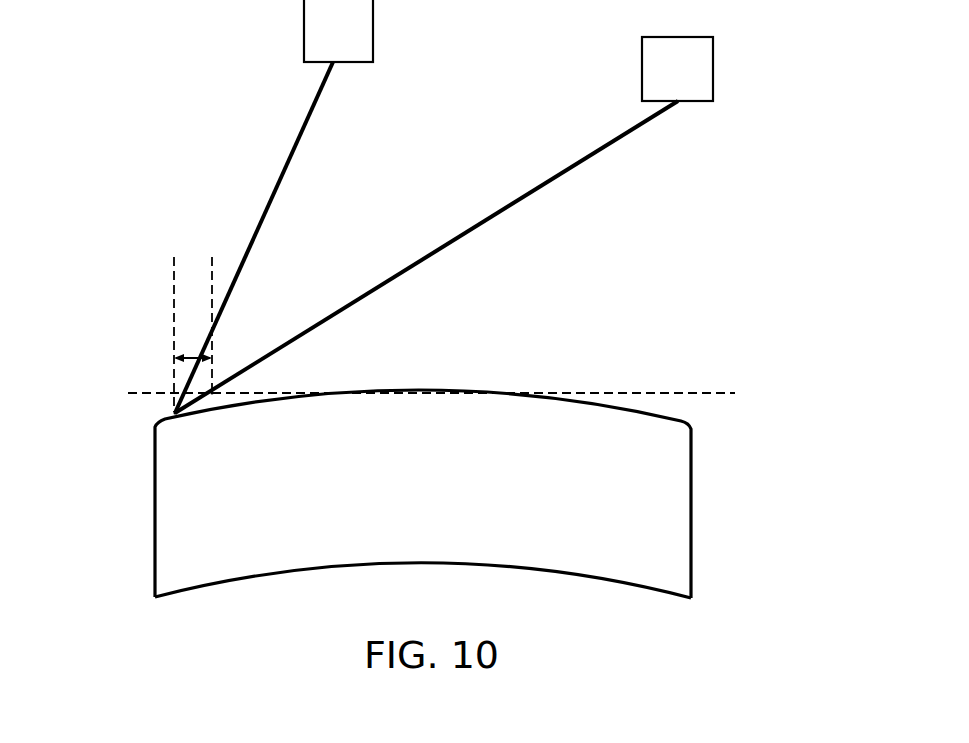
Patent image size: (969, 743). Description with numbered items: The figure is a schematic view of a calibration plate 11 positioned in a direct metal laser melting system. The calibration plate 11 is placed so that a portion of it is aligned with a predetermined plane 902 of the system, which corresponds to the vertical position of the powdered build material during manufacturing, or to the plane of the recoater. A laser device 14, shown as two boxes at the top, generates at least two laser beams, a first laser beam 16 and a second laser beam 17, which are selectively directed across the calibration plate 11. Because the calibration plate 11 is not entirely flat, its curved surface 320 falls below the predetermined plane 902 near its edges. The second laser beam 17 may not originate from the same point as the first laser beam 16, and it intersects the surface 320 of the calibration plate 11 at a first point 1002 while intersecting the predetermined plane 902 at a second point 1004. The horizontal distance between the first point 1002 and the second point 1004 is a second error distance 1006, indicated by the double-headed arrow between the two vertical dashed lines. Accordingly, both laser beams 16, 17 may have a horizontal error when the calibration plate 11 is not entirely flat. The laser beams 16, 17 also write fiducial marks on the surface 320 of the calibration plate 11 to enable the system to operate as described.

The laser device 14 is at (324, 42).
The second laser beam 17 is at (303, 127).
The first laser beam 16 is at (538, 183).
The second error distance 1006 is at (175, 346).
The second point 1004 is at (175, 382).
The first point 1002 is at (167, 410).
The predetermined plane 902 is at (675, 392).
The calibration plate 11 is at (675, 474).
The surface 320 is at (655, 552).